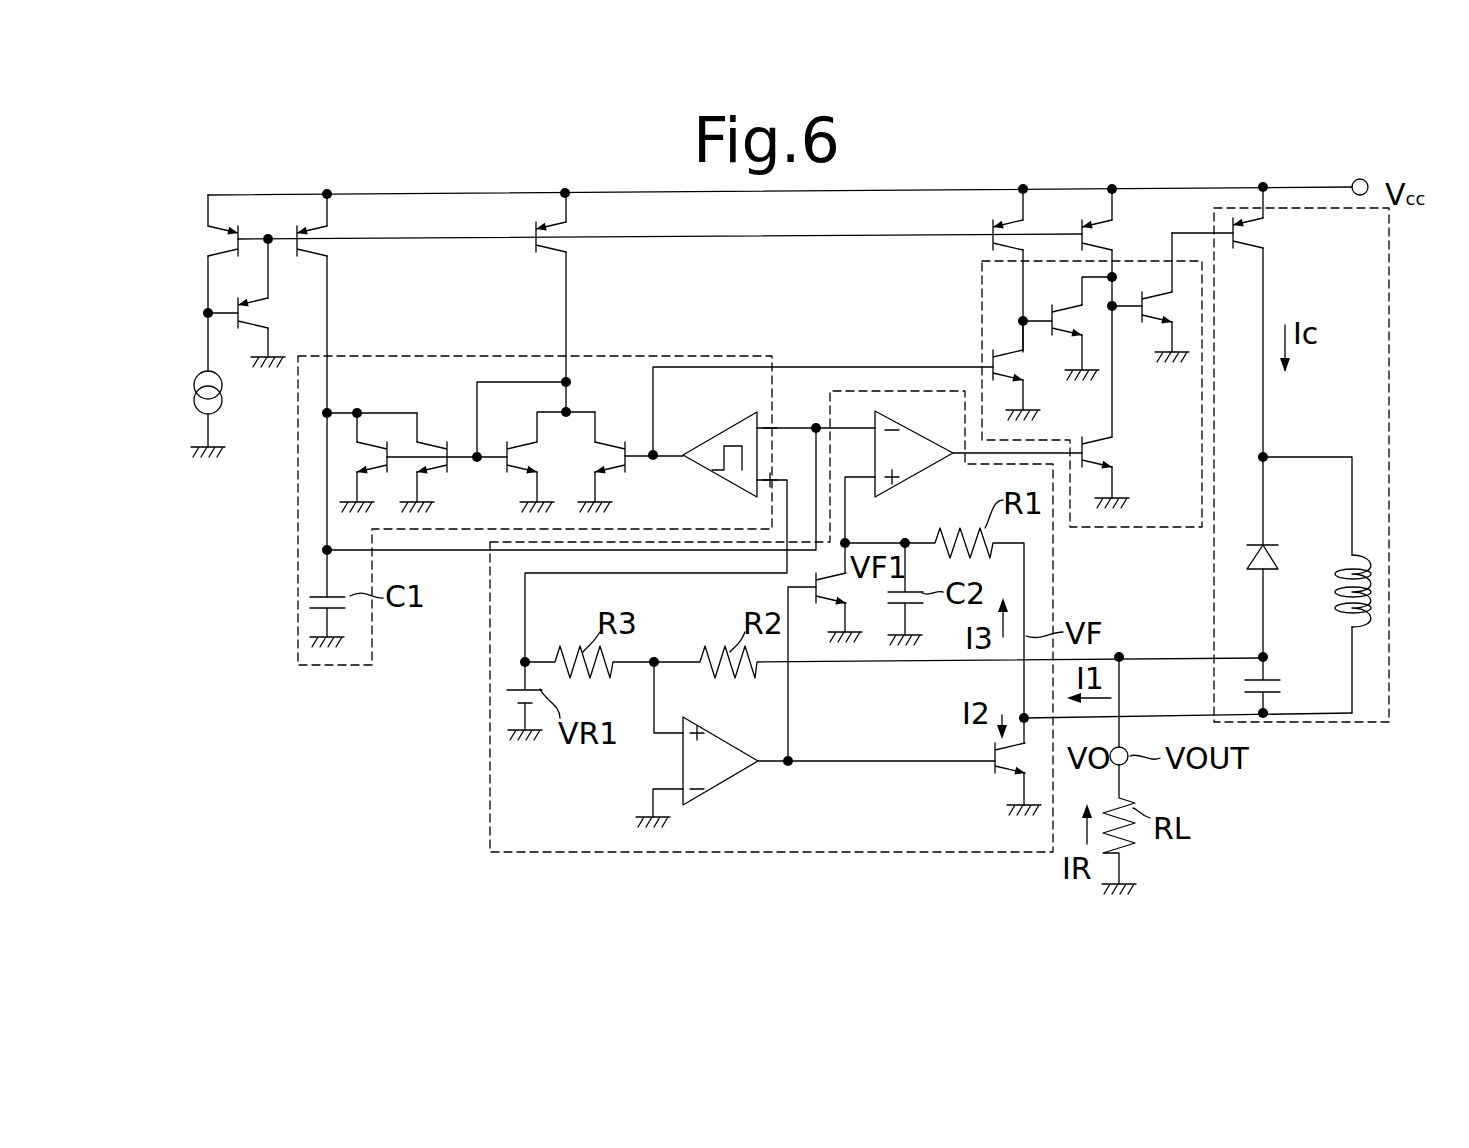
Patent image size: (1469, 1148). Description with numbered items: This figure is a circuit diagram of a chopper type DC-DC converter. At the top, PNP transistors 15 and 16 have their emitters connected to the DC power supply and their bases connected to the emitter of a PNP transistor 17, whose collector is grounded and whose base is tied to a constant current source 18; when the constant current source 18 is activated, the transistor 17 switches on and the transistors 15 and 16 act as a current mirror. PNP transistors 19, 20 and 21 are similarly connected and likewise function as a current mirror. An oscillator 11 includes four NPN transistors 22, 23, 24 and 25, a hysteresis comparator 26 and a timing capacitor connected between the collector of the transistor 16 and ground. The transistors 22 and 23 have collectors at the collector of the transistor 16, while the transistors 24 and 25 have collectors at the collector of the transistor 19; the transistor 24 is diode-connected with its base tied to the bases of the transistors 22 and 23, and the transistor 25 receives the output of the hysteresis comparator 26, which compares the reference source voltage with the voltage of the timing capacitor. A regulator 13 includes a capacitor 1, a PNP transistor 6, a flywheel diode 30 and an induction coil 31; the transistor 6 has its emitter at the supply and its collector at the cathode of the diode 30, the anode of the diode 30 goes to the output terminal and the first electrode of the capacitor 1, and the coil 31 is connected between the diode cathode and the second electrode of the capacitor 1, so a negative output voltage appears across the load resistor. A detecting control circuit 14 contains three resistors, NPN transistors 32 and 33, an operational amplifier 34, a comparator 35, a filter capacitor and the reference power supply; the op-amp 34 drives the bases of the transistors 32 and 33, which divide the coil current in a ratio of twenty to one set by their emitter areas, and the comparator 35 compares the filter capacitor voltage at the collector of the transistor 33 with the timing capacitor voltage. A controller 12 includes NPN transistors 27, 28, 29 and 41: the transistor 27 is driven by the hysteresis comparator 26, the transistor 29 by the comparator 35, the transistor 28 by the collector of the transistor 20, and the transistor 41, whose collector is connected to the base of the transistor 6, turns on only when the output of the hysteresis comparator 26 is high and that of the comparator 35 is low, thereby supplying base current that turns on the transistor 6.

The capacitor 1 is at (1270, 680).
The PNP transistor 6 is at (1251, 232).
The oscillator 11 is at (689, 356).
The controller 12 is at (982, 295).
The regulator 13 is at (1389, 323).
The detecting control circuit 14 is at (490, 800).
The PNP transistor 15 is at (224, 231).
The PNP transistor 16 is at (314, 251).
The PNP transistor 17 is at (260, 323).
The constant current source 18 is at (221, 404).
The PNP transistor 19 is at (552, 251).
The PNP transistor 20 is at (997, 222).
The PNP transistor 21 is at (1100, 227).
The NPN transistor 22 is at (372, 443).
The NPN transistor 23 is at (441, 443).
The NPN transistor 24 is at (522, 447).
The NPN transistor 25 is at (628, 447).
The hysteresis comparator 26 is at (728, 431).
The NPN transistor 27 is at (1004, 358).
The NPN transistor 28 is at (1062, 312).
The NPN transistor 29 is at (1105, 446).
The flywheel diode 30 is at (1270, 542).
The induction coil 31 is at (1360, 556).
The NPN transistor 32 is at (1000, 778).
The NPN transistor 33 is at (830, 596).
The operational amplifier 34 is at (732, 782).
The comparator 35 is at (898, 479).
The NPN transistor 41 is at (1160, 321).